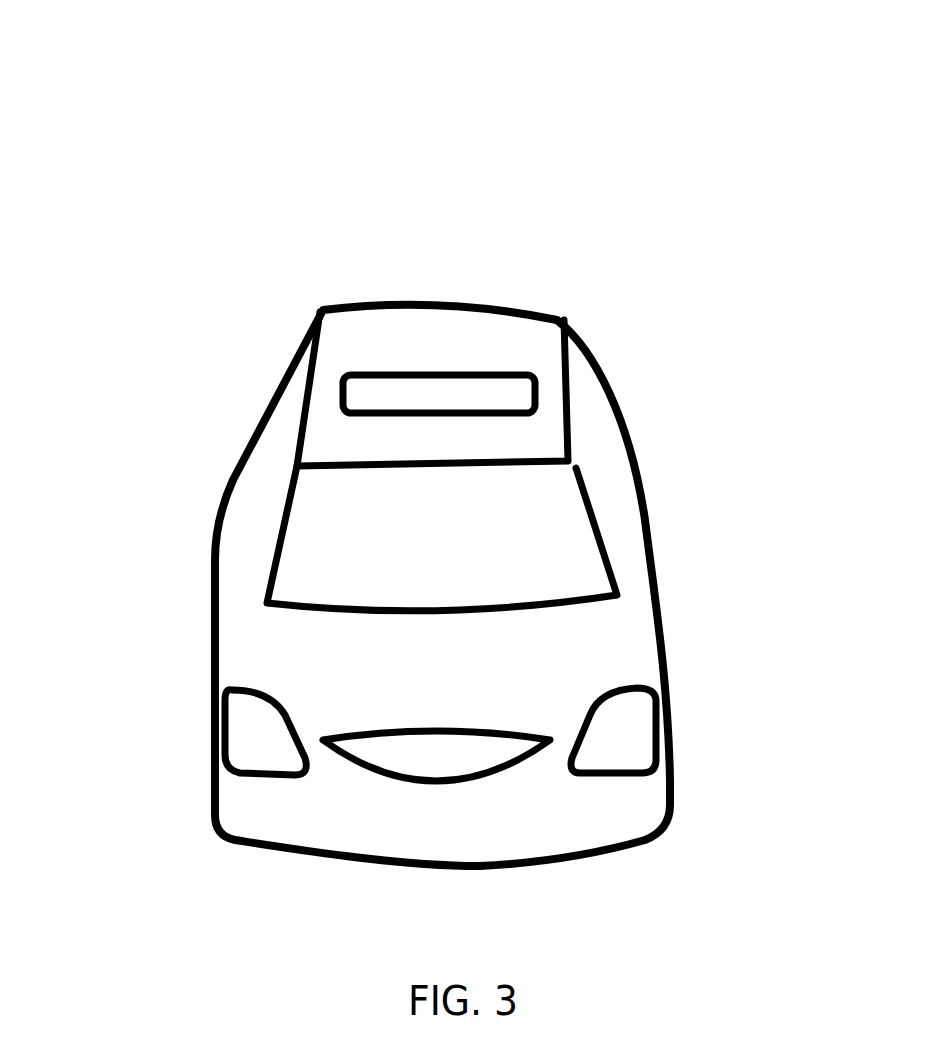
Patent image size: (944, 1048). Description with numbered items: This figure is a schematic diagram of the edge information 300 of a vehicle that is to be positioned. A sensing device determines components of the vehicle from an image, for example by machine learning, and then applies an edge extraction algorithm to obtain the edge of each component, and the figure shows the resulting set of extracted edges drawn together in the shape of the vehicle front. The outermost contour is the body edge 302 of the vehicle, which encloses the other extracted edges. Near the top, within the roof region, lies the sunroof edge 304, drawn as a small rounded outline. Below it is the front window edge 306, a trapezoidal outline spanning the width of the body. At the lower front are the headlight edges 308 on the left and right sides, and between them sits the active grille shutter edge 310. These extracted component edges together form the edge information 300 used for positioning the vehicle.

The edge information 300 is at (213, 102).
The body edge 302 is at (565, 330).
The sunroof edge 304 is at (370, 370).
The front window edge 306 is at (590, 500).
The headlight edge 308 is at (657, 700).
The active grille shutter edge 310 is at (373, 727).